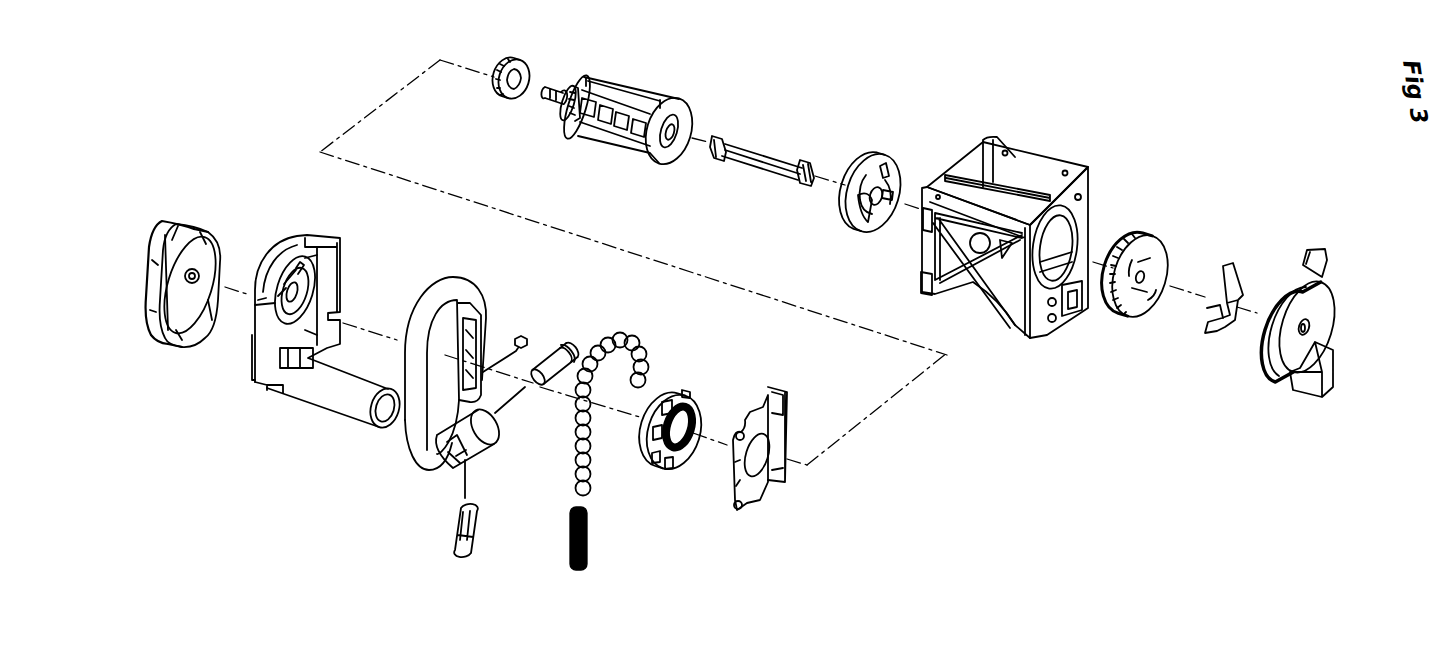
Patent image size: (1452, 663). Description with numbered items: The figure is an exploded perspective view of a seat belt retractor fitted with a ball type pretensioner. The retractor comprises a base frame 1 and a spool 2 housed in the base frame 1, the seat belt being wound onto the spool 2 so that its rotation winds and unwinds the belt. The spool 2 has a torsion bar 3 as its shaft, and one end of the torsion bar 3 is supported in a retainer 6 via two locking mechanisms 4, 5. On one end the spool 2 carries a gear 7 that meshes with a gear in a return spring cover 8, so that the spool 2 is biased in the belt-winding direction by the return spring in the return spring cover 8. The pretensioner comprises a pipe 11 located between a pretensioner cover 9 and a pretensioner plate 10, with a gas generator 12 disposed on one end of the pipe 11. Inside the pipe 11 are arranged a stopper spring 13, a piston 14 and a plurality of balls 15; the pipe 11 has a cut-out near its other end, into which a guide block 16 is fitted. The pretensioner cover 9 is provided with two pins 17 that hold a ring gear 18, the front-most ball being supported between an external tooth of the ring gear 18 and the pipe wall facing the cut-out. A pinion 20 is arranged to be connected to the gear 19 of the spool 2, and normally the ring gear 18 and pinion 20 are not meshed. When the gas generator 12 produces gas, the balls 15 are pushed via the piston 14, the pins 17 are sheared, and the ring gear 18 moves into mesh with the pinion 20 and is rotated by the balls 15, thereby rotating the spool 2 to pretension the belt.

The base frame 1 is at (1037, 152).
The spool 2 is at (630, 88).
The torsion bar 3 is at (772, 153).
The locking mechanism 4 is at (880, 152).
The locking mechanism 5 is at (1227, 265).
The retainer 6 is at (1297, 280).
The gear 7 is at (548, 101).
The return spring cover 8 is at (200, 227).
The pretensioner cover 9 is at (330, 242).
The pretensioner plate 10 is at (770, 392).
The pipe 11 is at (477, 283).
The gas generator 12 is at (553, 343).
The stopper spring 13 is at (570, 545).
The piston 14 is at (574, 497).
The balls 15 is at (575, 438).
The guide block 16 is at (477, 523).
The pins 17 is at (280, 298).
The ring gear 18 is at (685, 393).
The gear 19 is at (564, 110).
The pinion 20 is at (517, 59).